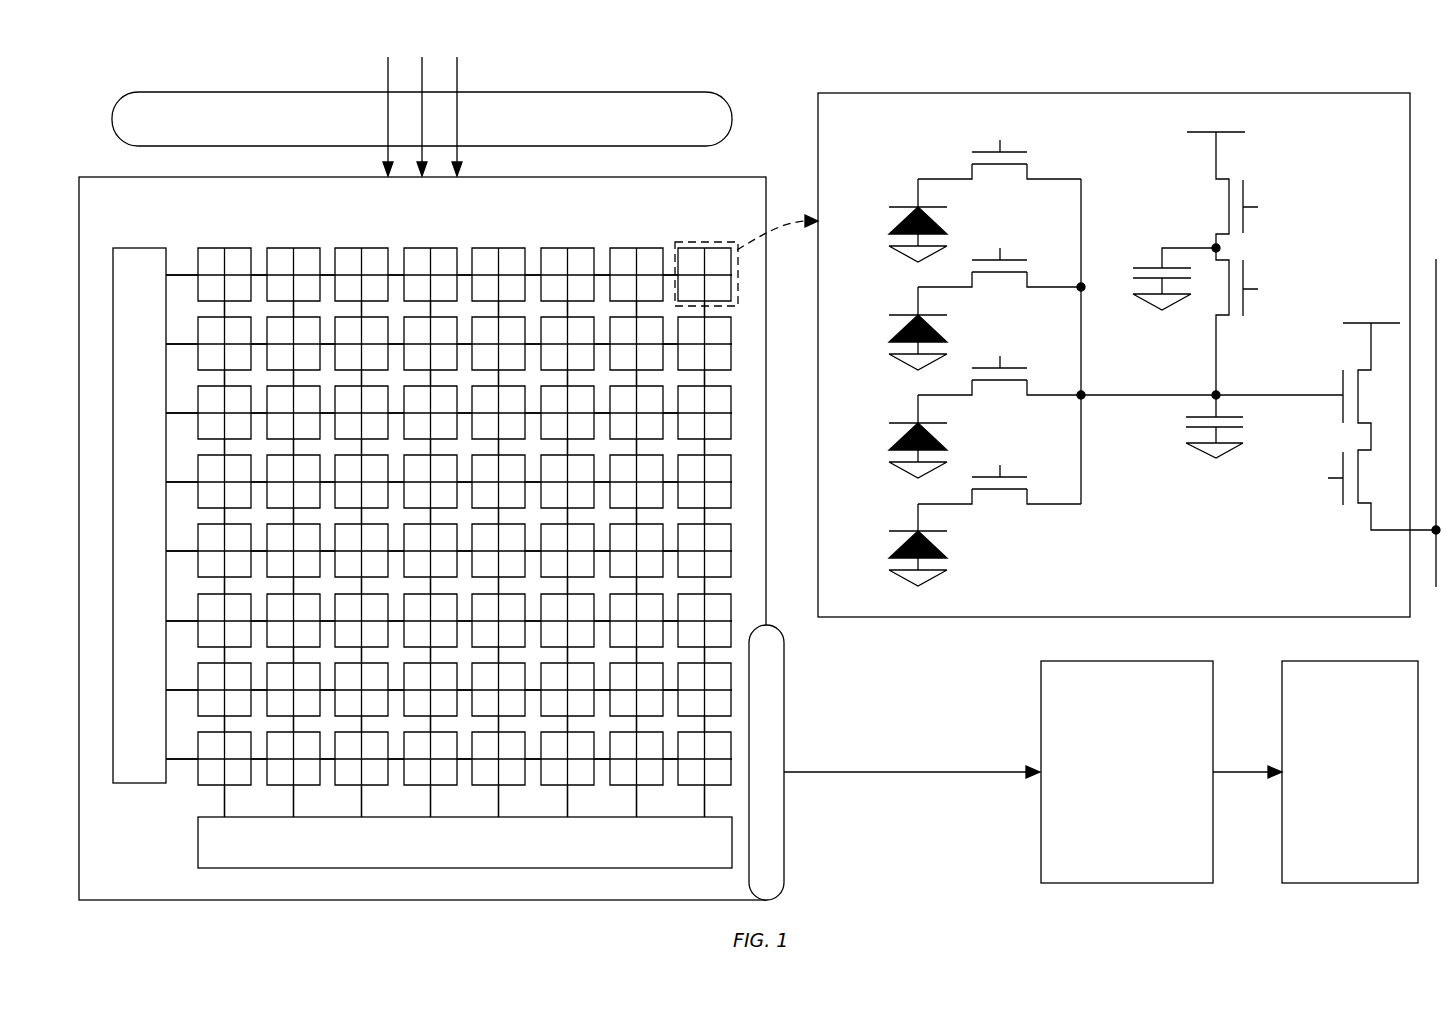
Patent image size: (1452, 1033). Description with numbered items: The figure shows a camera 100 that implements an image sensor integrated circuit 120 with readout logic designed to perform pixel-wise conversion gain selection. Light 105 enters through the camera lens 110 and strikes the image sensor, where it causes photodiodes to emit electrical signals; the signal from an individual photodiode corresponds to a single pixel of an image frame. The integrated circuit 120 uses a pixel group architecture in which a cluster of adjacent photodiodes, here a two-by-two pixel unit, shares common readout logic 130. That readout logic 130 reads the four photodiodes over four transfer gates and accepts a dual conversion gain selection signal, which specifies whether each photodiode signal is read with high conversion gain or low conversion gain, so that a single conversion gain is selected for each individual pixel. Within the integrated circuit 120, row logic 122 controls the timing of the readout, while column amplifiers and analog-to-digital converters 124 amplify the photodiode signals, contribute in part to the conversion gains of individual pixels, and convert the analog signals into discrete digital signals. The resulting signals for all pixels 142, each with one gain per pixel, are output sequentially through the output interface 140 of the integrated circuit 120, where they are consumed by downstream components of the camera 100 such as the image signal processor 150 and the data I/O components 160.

The camera 100 is at (778, 79).
The light 105 is at (418, 102).
The camera lens 110 is at (422, 119).
The image sensor integrated circuit 120 is at (422, 538).
The row logic 122 is at (139, 515).
The column amplifiers and analog-to-digital converters (ADCs) 124 is at (465, 842).
The readout logic 130 is at (1088, 355).
The output interface 140 is at (818, 762).
The pixels 142 is at (912, 783).
The image signal processor (ISP) 150 is at (1161, 772).
The data I/O components 160 is at (1350, 772).